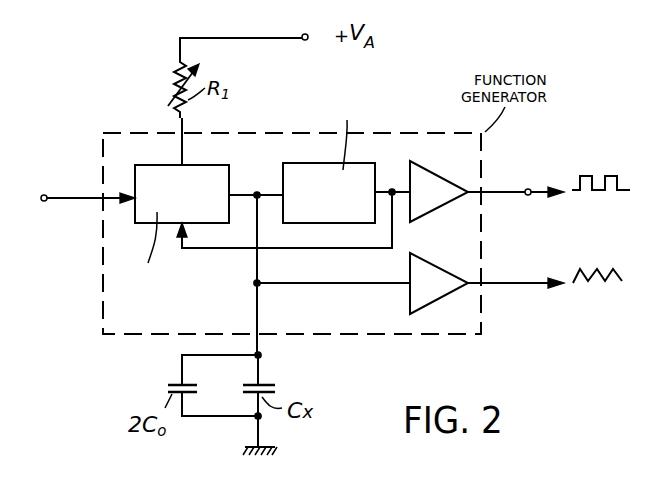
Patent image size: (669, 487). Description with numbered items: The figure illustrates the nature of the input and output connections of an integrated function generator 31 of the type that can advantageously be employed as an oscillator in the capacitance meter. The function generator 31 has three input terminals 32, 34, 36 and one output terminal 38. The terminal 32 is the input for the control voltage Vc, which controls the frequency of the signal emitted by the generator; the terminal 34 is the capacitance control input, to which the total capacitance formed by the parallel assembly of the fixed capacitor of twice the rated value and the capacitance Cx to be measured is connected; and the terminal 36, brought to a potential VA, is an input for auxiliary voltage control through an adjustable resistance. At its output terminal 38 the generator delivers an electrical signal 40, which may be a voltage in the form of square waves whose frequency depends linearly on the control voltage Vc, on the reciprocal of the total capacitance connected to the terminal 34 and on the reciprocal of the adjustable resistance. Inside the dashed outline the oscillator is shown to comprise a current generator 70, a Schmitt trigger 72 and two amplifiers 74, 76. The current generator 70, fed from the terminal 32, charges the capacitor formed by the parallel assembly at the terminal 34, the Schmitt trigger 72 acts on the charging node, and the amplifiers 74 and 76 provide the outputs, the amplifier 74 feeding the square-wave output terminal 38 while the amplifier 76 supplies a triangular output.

The function generator 31 is at (428, 98).
The input terminal 32 is at (46, 202).
The capacitance control input terminal 34 is at (261, 355).
The auxiliary voltage control input terminal 36 is at (309, 39).
The output terminal 38 is at (541, 166).
The electrical signal 40 is at (611, 134).
The current generator 70 is at (169, 233).
The Schmitt trigger 72 is at (320, 154).
The amplifier 74 is at (420, 209).
The amplifier 76 is at (421, 301).